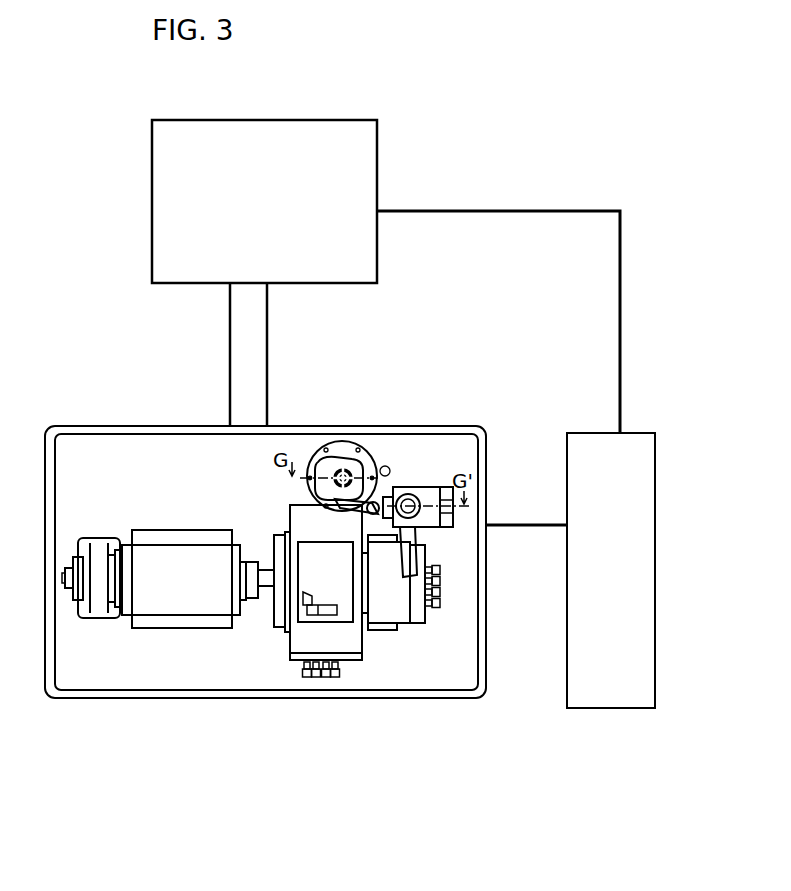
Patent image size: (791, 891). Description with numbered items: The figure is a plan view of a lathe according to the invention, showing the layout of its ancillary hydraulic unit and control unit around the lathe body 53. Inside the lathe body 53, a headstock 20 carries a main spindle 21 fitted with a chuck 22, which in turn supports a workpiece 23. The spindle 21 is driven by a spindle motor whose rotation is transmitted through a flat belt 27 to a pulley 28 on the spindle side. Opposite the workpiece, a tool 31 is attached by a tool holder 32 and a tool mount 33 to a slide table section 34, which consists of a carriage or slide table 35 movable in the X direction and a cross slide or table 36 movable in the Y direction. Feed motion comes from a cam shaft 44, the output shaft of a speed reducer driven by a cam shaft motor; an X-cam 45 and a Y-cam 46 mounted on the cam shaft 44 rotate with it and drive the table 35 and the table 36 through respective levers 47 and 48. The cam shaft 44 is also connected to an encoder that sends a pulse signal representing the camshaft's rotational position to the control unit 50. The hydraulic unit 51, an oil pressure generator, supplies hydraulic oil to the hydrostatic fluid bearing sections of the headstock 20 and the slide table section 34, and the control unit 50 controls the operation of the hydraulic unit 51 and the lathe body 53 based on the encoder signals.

The headstock 20 is at (163, 553).
The main spindle 21 is at (248, 588).
The chuck 22 is at (268, 580).
The workpiece 23 is at (282, 598).
The flat belt 27 is at (98, 612).
The pulley 28 is at (88, 595).
The tool 31 is at (305, 610).
The tool holder 32 is at (315, 608).
The tool mount 33 is at (345, 617).
The slide table section 34 is at (362, 647).
The carriage or slide table 35 is at (403, 617).
The cross slide or table 36 is at (347, 652).
The cam shaft 44 is at (338, 474).
The X-cam 45 is at (357, 472).
The Y-cam 46 is at (343, 458).
The lever 47 is at (417, 513).
The lever 48 is at (389, 498).
The control unit 50 is at (620, 702).
The hydraulic unit 51 is at (322, 128).
The lathe body 53 is at (137, 425).